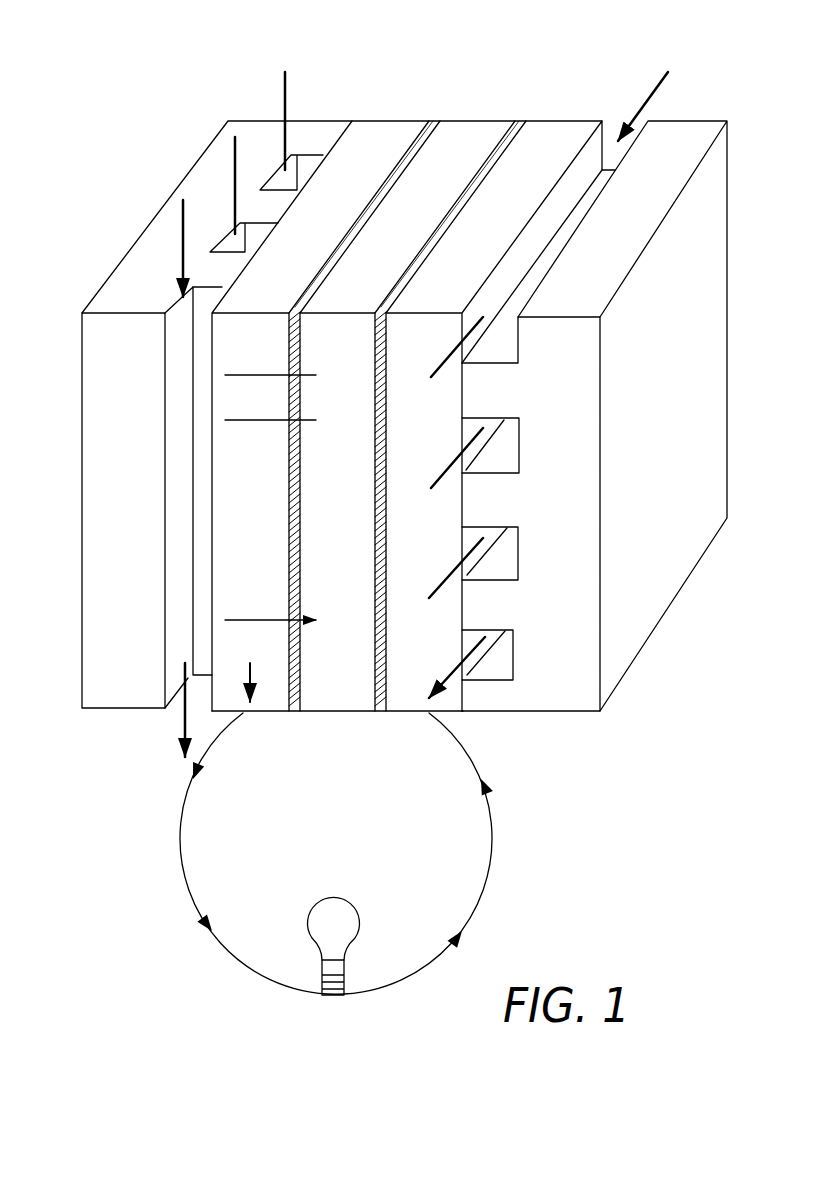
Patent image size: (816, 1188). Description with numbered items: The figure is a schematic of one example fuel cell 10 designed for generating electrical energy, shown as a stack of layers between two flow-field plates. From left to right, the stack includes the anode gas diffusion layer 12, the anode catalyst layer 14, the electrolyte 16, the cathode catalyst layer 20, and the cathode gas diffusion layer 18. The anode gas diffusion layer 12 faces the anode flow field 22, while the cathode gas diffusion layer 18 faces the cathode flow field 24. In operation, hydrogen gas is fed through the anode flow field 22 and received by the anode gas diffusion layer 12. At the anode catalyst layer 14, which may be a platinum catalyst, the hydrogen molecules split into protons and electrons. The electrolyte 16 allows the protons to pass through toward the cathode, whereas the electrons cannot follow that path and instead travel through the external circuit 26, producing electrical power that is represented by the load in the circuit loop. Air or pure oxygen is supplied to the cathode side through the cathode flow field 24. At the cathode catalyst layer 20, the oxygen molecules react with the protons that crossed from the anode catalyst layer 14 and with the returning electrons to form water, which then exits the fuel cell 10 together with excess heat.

The fuel cell 10 is at (120, 134).
The anode gas diffusion layer 12 is at (298, 416).
The anode catalyst layer 14 is at (431, 124).
The electrolyte 16 is at (388, 363).
The cathode gas diffusion layer 18 is at (500, 416).
The cathode catalyst layer 20 is at (516, 124).
The anode flow field 22 is at (310, 167).
The cathode flow field 24 is at (503, 347).
The external circuit 26 is at (183, 857).